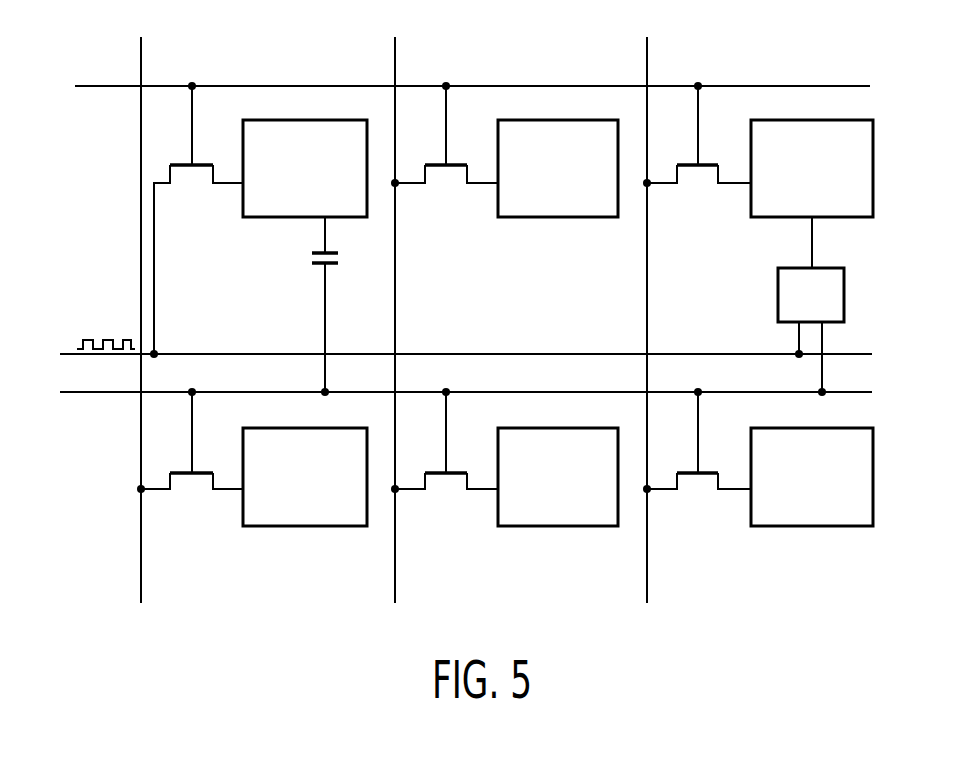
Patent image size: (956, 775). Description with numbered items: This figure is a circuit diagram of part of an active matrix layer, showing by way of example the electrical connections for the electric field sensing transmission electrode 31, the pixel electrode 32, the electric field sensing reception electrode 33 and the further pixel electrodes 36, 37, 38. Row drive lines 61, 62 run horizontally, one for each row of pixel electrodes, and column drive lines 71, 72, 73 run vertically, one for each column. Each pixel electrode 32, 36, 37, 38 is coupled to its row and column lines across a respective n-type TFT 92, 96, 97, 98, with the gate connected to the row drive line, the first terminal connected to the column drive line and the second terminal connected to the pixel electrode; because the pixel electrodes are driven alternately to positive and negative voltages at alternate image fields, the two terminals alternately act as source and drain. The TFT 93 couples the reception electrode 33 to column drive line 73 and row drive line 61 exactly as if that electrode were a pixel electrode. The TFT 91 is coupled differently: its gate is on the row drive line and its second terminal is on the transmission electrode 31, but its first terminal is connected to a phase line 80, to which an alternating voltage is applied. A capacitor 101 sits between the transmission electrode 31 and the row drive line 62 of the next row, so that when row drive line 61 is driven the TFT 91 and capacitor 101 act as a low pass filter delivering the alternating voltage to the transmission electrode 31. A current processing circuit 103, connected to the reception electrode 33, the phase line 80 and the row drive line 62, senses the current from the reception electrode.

The row drive line 61 is at (98, 84).
The row drive line 62 is at (93, 396).
The column drive line 71 is at (143, 52).
The column drive line 72 is at (397, 52).
The column drive line 73 is at (649, 52).
The phase line 80 is at (67, 352).
The n-type transistor 91 is at (177, 162).
The n-type TFT 92 is at (432, 162).
The n-type transistor 93 is at (684, 162).
The n-type TFT 96 is at (177, 470).
The n-type TFT 97 is at (432, 470).
The n-type TFT 98 is at (684, 470).
The electric field sensing transmission electrode 31 is at (243, 200).
The pixel electrode 32 is at (563, 218).
The electric field sensing reception electrode 33 is at (751, 200).
The pixel electrode 36 is at (307, 517).
The pixel electrode 37 is at (563, 517).
The pixel electrode 38 is at (816, 517).
The capacitor 101 is at (312, 258).
The current processing circuit 103 is at (783, 294).